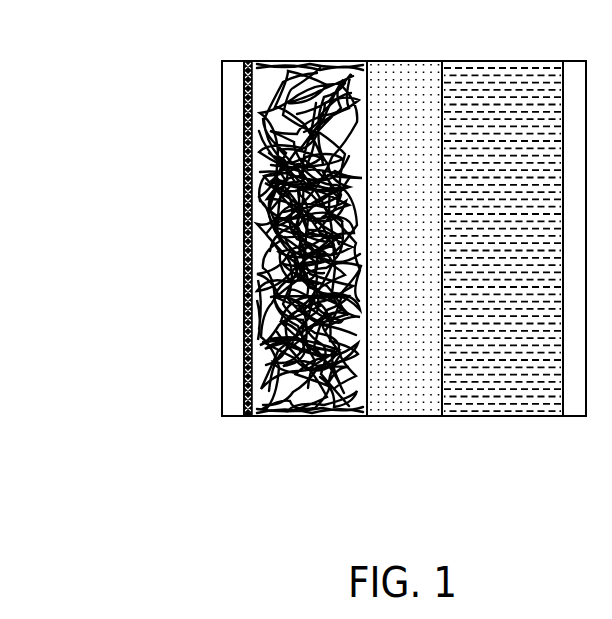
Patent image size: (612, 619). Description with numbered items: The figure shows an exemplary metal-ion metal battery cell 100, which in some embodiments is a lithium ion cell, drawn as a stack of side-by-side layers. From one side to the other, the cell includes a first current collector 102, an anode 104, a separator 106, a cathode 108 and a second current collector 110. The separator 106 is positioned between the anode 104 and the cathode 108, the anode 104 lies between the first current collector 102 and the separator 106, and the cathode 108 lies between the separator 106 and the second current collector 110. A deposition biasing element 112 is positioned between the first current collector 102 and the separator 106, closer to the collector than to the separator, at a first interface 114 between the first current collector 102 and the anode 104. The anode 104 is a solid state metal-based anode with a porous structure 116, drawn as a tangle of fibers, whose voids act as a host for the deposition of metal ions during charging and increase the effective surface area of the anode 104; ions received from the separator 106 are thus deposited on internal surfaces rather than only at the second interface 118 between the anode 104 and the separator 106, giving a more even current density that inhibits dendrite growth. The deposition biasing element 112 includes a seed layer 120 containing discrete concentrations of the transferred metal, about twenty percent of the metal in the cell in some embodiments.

The battery cell 100 is at (106, 55).
The first current collector 102 is at (222, 107).
The anode 104 is at (262, 62).
The separator 106 is at (404, 60).
The cathode 108 is at (510, 418).
The second current collector 110 is at (577, 418).
The deposition biasing element 112 is at (236, 210).
The first interface 114 is at (250, 430).
The porous structure 116 is at (297, 51).
The second interface 118 is at (363, 430).
The seed layer 120 is at (244, 314).